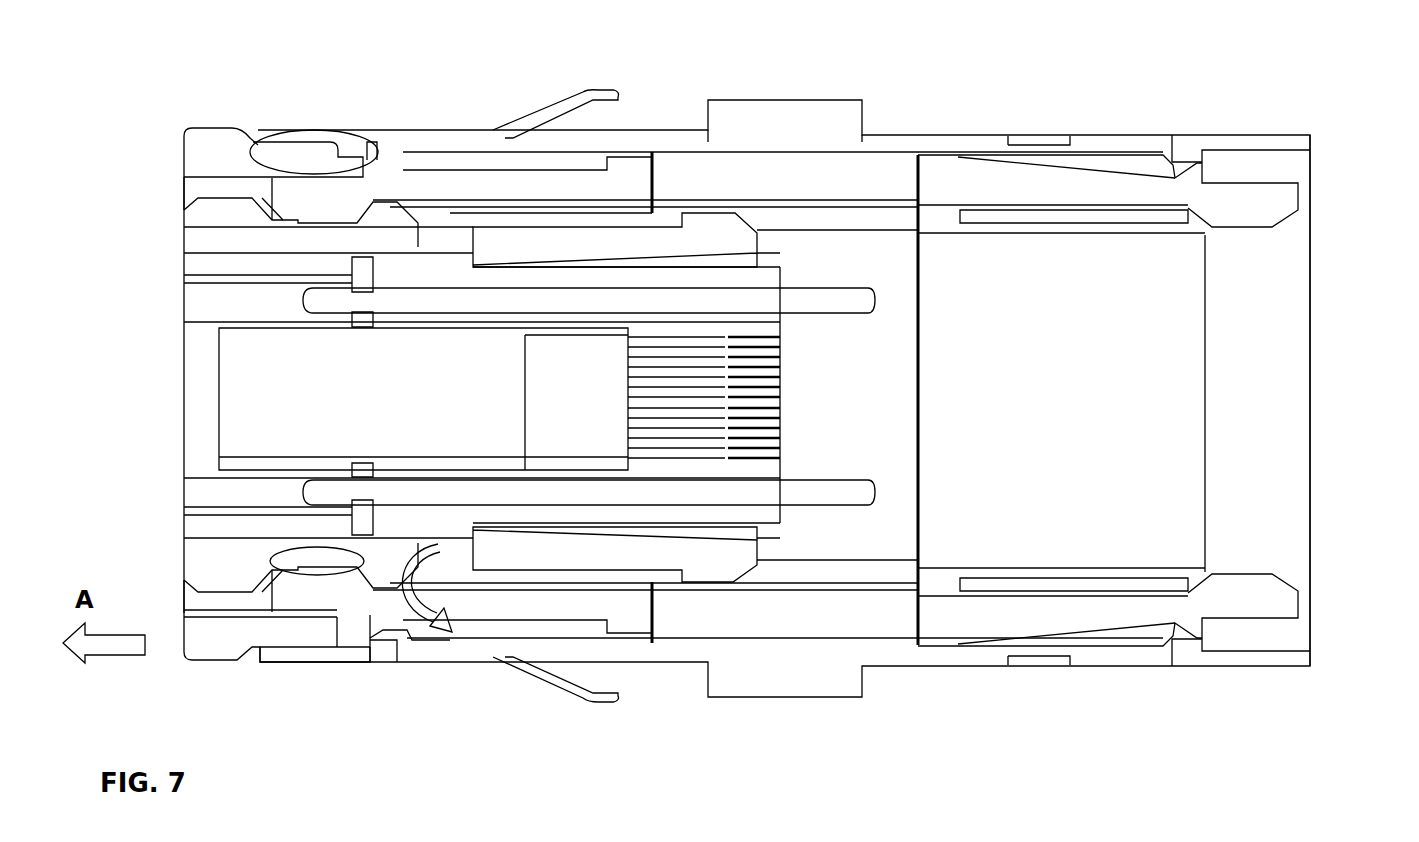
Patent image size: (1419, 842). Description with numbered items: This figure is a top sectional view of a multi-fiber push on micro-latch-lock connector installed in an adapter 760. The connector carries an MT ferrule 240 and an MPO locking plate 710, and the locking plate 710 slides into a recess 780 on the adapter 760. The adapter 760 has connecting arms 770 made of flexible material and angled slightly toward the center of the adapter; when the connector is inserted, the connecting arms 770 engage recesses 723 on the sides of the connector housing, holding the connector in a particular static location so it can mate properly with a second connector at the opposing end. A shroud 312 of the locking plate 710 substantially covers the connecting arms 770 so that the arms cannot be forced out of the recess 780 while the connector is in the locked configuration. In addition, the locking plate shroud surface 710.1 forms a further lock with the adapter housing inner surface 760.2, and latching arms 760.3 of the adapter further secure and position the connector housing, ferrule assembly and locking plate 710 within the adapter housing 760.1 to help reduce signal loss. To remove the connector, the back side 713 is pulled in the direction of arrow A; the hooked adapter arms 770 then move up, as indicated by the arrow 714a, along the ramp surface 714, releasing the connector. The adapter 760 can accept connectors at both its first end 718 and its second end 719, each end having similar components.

The shroud 312 is at (185, 124).
The MPO locking plate 710 is at (221, 127).
The back side 713 is at (170, 152).
The recess 780 is at (362, 145).
The connecting arms 770 is at (310, 197).
The first end 718 is at (172, 338).
The MT ferrule 240 is at (312, 404).
The adapter 760 is at (883, 111).
The latching arms 760.3 is at (575, 240).
The second end 719 is at (1340, 322).
The recesses 723 is at (283, 549).
The locking plate shroud surface 710.1 is at (270, 643).
The adapter housing inner surface 760.2 is at (292, 652).
The ramp surface 714 is at (370, 583).
The arrow 714a is at (443, 636).
The adapter housing 760.1 is at (383, 649).